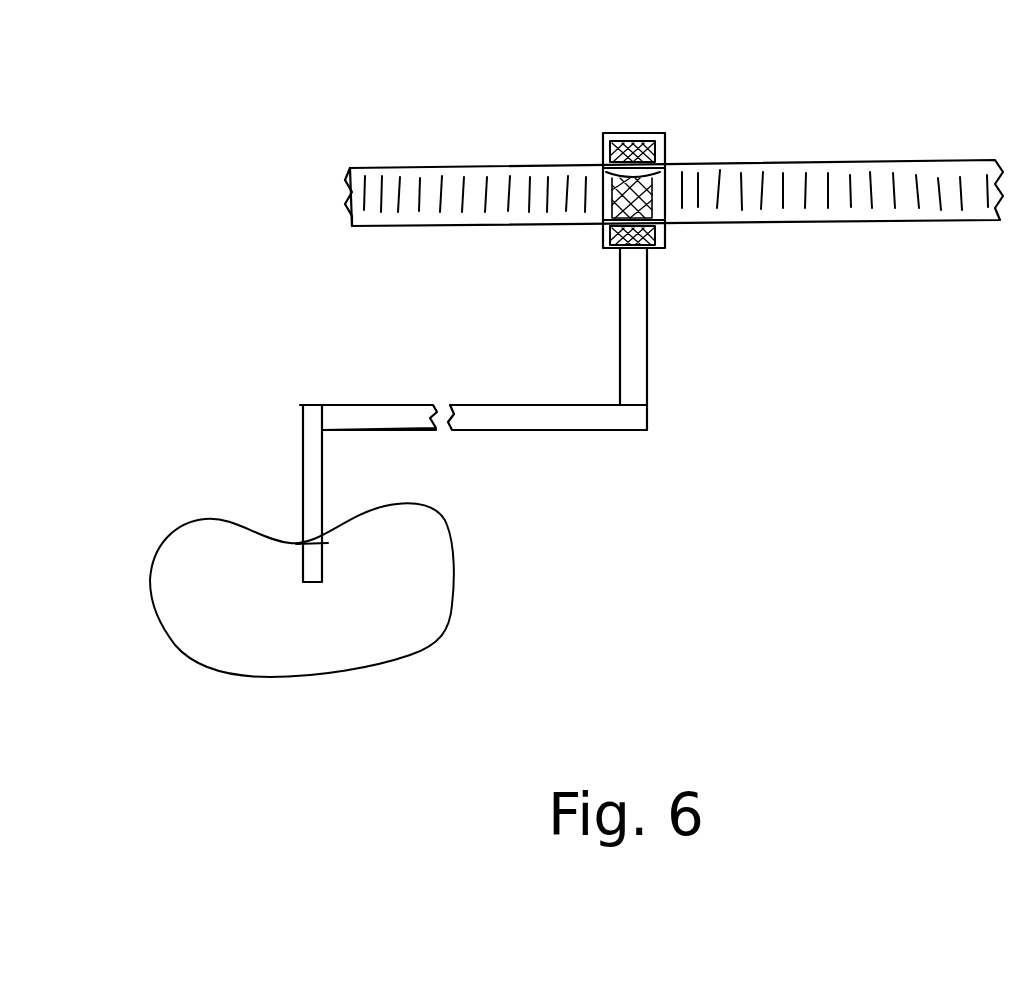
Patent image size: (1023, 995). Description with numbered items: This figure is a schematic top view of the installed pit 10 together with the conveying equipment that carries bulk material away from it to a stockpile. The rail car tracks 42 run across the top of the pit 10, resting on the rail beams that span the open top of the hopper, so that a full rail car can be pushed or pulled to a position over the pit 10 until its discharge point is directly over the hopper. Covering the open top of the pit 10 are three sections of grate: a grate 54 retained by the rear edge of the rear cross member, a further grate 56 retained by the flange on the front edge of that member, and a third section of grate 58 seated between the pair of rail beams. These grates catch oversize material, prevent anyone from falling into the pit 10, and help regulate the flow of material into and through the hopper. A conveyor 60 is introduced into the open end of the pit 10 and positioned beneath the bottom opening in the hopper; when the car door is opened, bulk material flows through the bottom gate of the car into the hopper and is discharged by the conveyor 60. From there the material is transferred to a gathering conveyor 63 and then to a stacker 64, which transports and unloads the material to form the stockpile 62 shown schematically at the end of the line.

The pit 10 is at (664, 162).
The rail car tracks 42 is at (445, 169).
The grate 54 is at (618, 138).
The further grate 56 is at (665, 158).
The third section of grate 58 is at (605, 249).
The conveyor 60 is at (647, 345).
The stockpile 62 is at (424, 567).
The gathering conveyor 63 is at (384, 414).
The stacker 64 is at (302, 466).